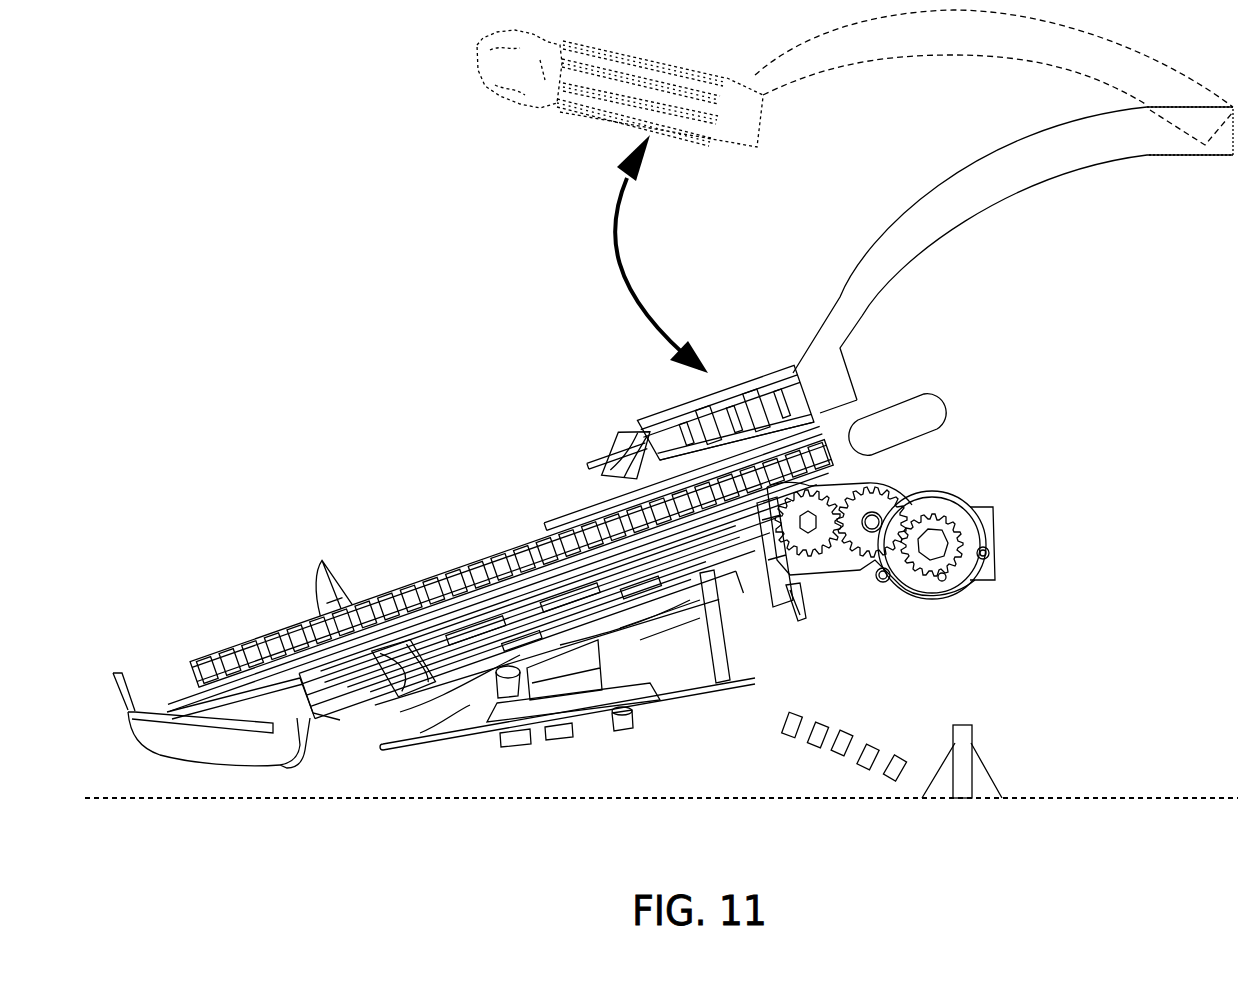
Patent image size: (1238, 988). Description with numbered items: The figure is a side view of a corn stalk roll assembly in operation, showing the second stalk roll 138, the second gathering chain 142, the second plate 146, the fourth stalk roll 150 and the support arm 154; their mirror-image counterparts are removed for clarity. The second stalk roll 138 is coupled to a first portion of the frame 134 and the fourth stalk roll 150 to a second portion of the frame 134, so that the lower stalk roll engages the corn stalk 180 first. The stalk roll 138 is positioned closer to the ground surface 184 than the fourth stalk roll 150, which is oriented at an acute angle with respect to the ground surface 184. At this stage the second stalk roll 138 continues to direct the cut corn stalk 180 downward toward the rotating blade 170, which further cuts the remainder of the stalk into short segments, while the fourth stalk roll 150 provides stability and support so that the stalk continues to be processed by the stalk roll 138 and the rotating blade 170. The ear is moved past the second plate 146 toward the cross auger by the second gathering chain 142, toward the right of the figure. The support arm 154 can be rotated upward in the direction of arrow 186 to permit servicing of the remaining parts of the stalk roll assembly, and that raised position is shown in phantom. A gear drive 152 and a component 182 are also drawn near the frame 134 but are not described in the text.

The frame 134 is at (798, 605).
The second stalk roll 138 is at (398, 738).
The second gathering chain 142 is at (395, 607).
The second plate 146 is at (560, 525).
The fourth stalk roll 150 is at (672, 410).
The gear drive 152 is at (850, 570).
The support arm 154 is at (978, 170).
The rotating blade 170 is at (433, 742).
The corn stalk 180 is at (733, 652).
The battery 182 is at (928, 410).
The ground surface 184 is at (674, 797).
The arrow 186 is at (980, 234).